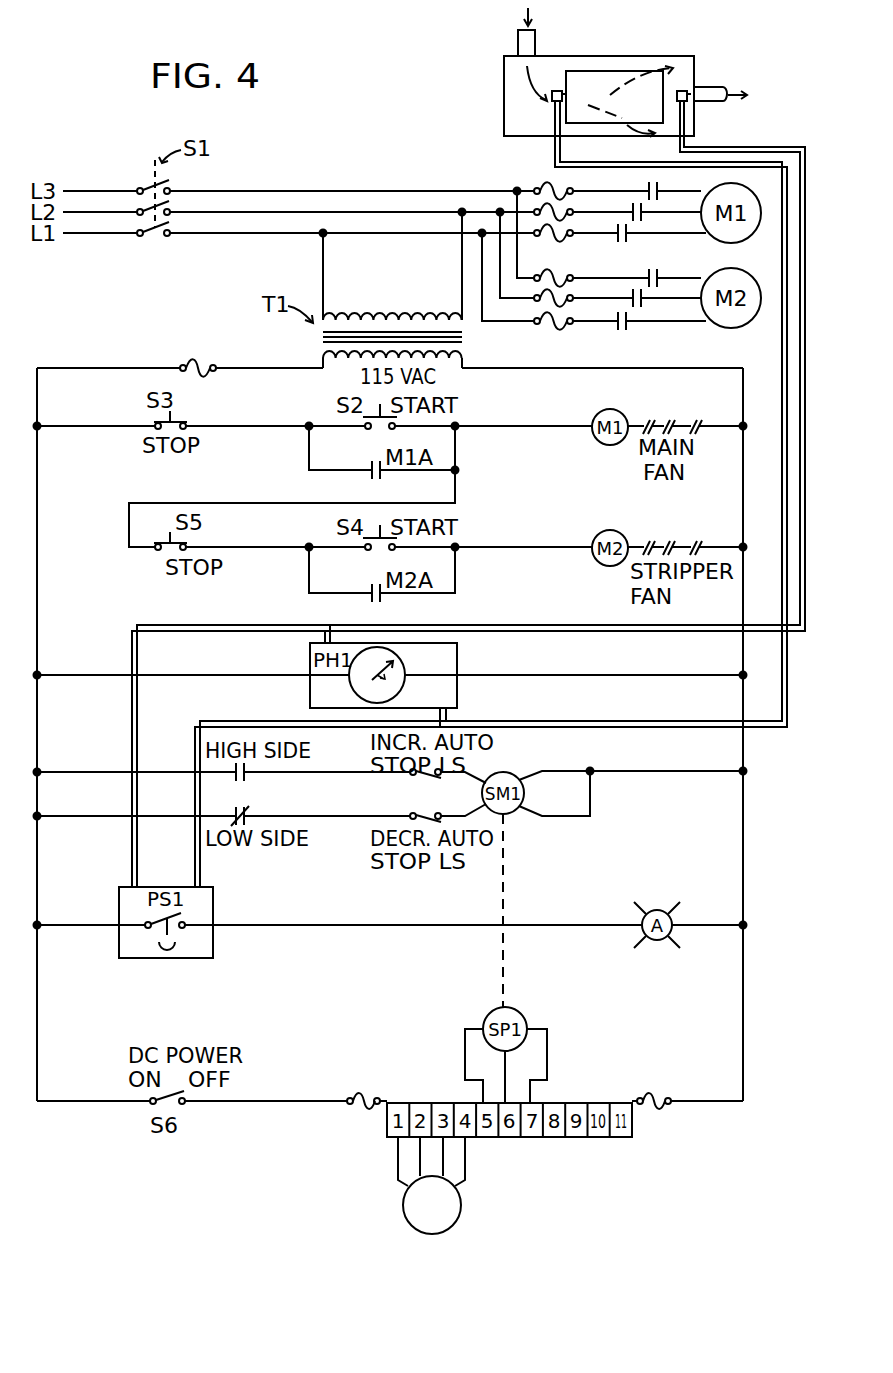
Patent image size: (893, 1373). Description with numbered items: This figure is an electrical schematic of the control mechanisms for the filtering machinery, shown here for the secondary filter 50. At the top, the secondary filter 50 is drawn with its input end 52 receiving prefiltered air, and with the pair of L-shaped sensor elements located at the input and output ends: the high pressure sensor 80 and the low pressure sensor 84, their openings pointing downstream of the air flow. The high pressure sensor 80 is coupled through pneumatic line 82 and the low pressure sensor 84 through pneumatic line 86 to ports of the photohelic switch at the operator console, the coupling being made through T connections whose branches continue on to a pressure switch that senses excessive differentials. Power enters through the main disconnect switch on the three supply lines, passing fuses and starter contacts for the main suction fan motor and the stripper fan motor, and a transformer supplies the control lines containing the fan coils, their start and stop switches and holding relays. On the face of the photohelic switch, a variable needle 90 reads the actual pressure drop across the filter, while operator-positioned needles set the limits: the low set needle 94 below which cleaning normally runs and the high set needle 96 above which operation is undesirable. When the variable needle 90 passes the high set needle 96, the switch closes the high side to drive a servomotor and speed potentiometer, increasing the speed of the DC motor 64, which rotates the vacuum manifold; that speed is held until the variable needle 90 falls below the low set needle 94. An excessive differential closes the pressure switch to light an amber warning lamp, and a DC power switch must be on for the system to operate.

The secondary filter 50 is at (620, 44).
The input end of the secondary filter 52 is at (568, 72).
The DC motor 64 is at (455, 1218).
The high pressure sensor 80 is at (557, 90).
The pneumatic line 82 is at (608, 162).
The low pressure sensor 84 is at (686, 90).
The pneumatic line 86 is at (780, 147).
The variable needle 90 is at (388, 664).
The low set needle 94 is at (366, 660).
The high set needle 96 is at (395, 698).